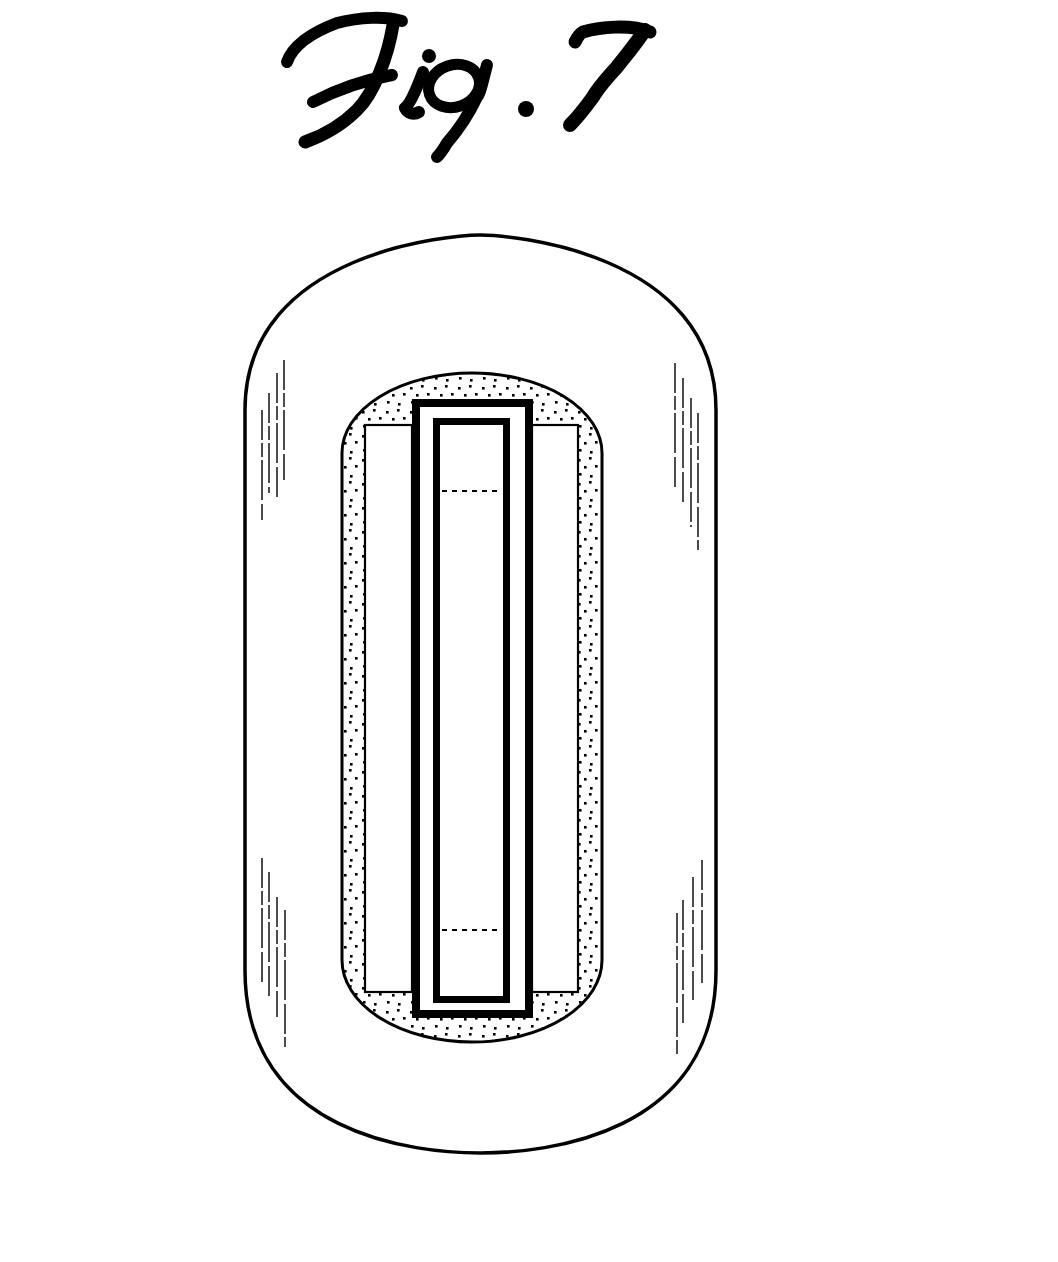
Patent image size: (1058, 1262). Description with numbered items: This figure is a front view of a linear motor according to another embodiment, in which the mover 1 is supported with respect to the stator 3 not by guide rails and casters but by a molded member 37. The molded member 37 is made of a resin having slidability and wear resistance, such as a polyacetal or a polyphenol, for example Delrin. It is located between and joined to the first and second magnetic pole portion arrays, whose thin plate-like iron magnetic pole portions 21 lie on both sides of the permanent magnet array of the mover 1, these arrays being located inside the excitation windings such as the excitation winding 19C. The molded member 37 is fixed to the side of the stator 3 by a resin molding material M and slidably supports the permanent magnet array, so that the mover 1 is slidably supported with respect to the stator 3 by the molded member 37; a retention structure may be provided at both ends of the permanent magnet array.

The mover 1 is at (483, 530).
The stator 3 is at (230, 685).
The excitation winding 19C is at (300, 508).
The magnetic pole portion 21 is at (400, 725).
The molded member 37 is at (530, 600).
The resin molding material M is at (560, 1005).